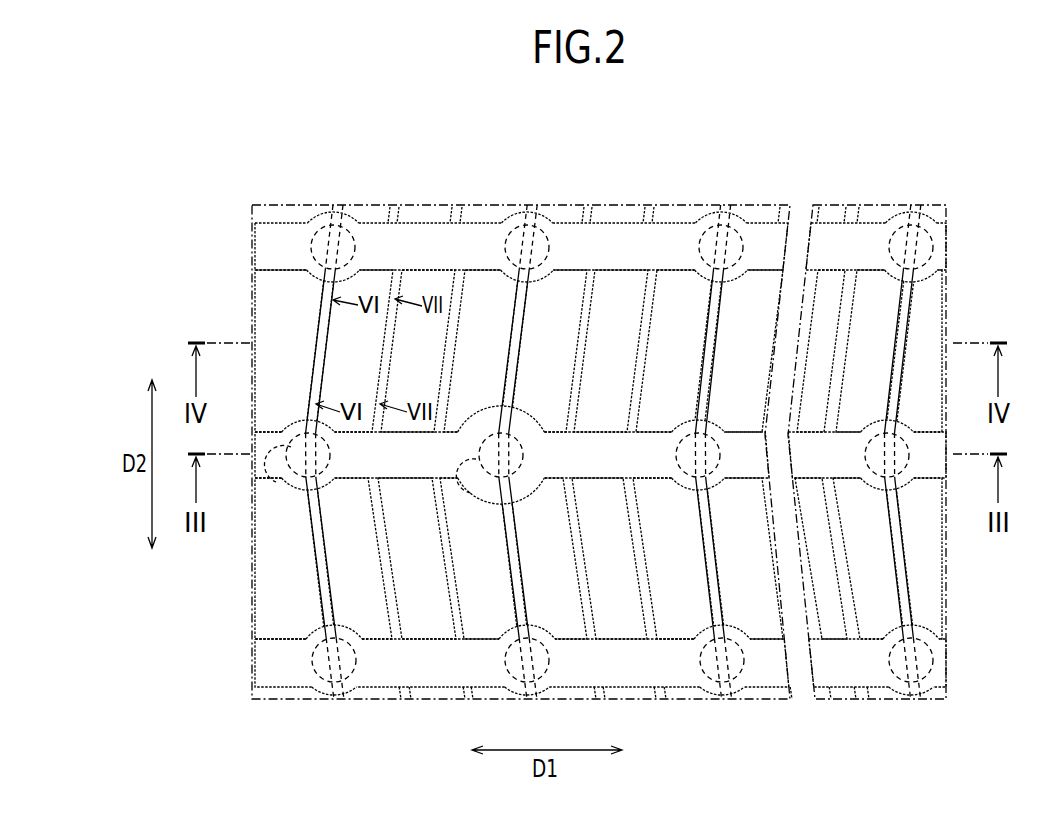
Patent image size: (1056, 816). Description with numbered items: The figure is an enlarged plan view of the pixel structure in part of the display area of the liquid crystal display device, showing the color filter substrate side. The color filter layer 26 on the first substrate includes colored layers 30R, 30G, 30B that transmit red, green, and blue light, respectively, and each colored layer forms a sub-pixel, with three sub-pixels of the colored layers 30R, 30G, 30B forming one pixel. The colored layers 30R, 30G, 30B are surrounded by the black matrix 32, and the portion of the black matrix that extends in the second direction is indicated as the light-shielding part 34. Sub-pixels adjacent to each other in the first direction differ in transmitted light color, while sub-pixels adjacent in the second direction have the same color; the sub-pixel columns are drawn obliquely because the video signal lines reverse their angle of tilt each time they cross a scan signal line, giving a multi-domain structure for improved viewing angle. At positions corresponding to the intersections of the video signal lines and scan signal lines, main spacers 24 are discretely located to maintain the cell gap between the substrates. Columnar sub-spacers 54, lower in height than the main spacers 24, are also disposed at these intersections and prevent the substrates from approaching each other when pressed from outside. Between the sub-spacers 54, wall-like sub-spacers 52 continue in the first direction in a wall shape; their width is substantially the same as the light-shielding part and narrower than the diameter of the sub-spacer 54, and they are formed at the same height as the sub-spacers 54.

The main spacer 24 is at (463, 492).
The color filter layer 26 is at (960, 583).
The colored layer (red) 30R is at (565, 293).
The colored layer (green) 30G is at (613, 292).
The colored layer (blue) 30B is at (670, 295).
The black matrix 32 is at (257, 665).
The light-shielding part 34 is at (328, 300).
The wall-like sub-spacer 52 is at (302, 423).
The sub-spacer 54 is at (277, 471).